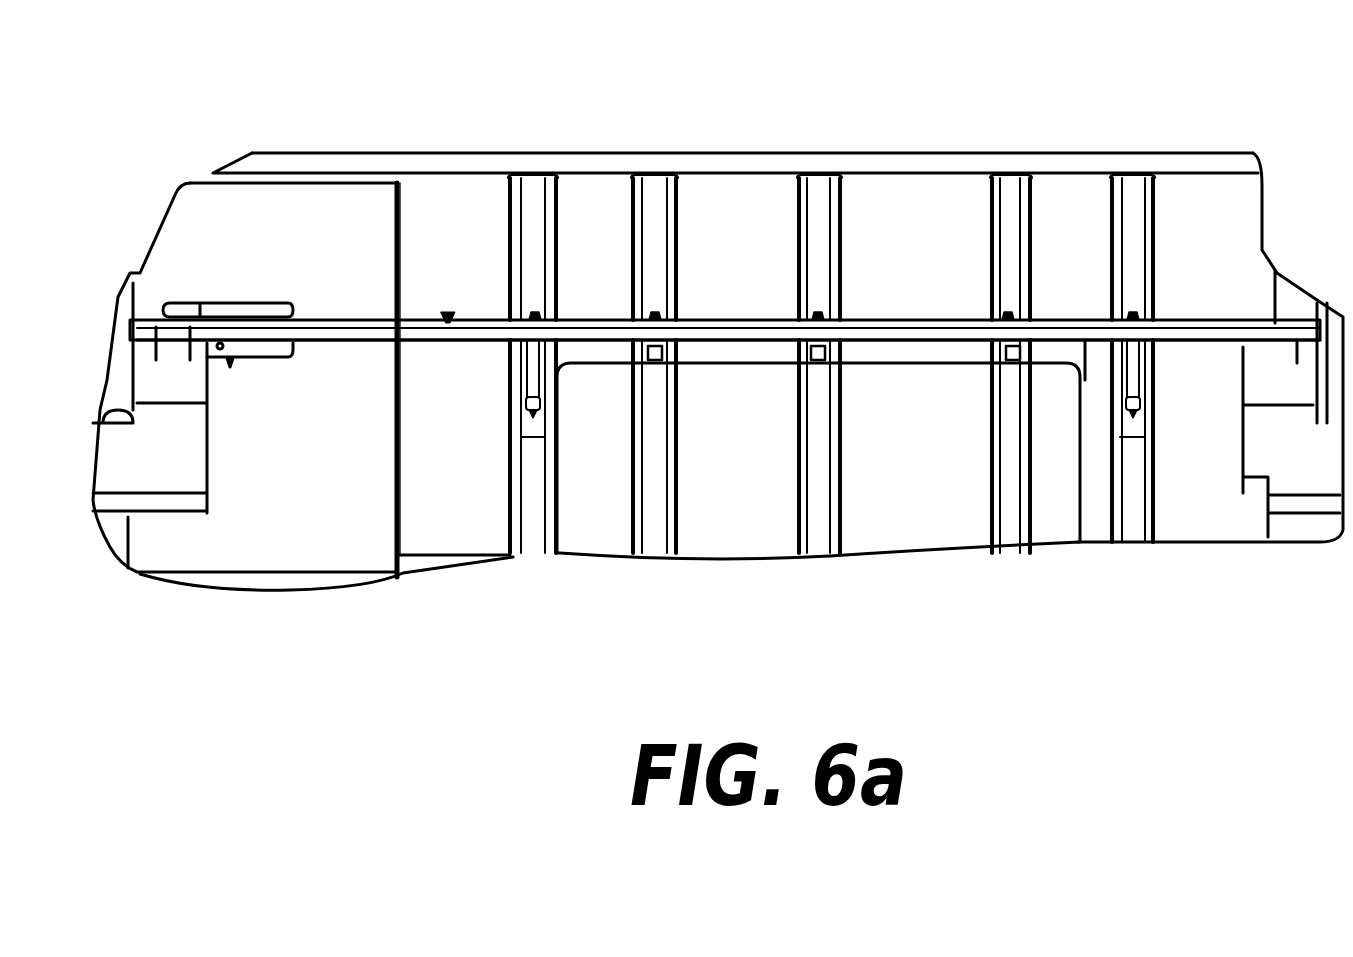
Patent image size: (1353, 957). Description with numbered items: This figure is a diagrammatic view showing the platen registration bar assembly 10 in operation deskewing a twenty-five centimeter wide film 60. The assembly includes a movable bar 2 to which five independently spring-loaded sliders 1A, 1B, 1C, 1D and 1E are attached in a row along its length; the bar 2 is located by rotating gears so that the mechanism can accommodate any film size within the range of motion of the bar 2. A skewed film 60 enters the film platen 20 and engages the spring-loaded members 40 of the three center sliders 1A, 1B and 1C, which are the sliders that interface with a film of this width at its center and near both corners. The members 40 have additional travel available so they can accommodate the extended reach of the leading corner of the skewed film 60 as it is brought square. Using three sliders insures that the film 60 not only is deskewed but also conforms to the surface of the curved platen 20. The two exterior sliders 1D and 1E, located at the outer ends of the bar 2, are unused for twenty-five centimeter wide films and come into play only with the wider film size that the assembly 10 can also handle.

The bar 2 is at (327, 322).
The platen registration bar assembly 10 is at (448, 312).
The slider 1A is at (817, 312).
The slider 1B is at (658, 312).
The slider 1C is at (1007, 312).
The slider 1D is at (537, 312).
The slider 1E is at (1133, 312).
The film platen 20 is at (457, 517).
The spring-loaded member 40 is at (655, 360).
The film 60 is at (872, 513).